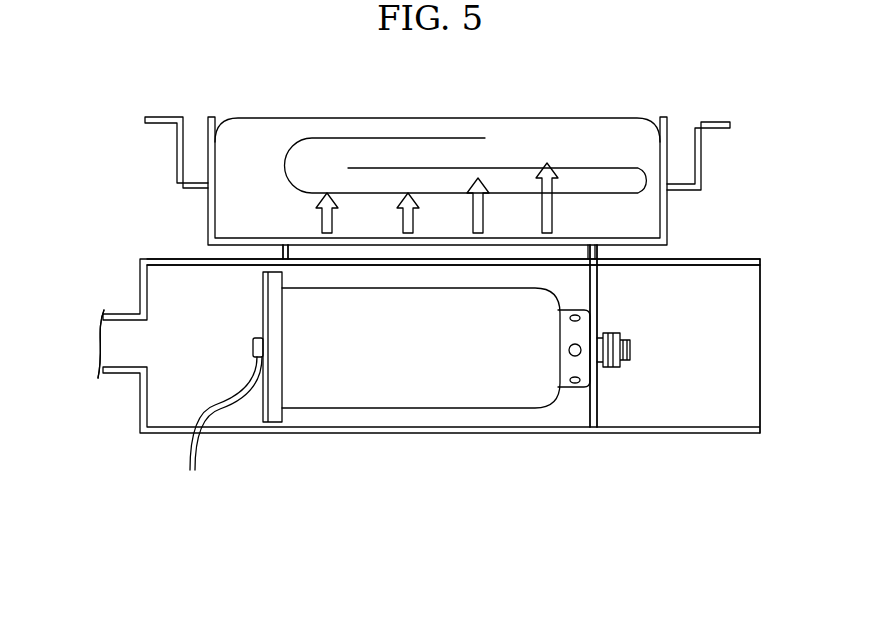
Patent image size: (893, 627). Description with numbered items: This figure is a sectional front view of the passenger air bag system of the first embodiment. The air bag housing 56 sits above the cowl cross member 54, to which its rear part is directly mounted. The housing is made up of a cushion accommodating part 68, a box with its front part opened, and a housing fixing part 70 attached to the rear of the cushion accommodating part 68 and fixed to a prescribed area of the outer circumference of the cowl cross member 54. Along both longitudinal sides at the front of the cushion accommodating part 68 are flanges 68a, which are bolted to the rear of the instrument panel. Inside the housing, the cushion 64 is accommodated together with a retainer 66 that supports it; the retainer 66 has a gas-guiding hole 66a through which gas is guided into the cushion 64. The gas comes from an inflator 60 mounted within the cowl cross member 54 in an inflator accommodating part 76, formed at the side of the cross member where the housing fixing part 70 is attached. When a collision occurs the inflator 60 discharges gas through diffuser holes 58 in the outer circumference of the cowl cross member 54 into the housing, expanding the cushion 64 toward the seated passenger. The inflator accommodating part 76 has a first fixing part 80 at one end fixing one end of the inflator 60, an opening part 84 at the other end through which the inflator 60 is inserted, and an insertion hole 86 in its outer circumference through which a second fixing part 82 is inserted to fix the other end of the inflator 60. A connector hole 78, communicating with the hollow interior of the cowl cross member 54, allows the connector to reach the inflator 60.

The cowl cross member 54 is at (105, 390).
The air bag housing 56 is at (128, 212).
The diffuser holes 58 is at (457, 262).
The inflator 60 is at (540, 400).
The cushion 64 is at (363, 123).
The retainer 66 is at (667, 243).
The gas-guiding hole 66a is at (530, 245).
The cushion accommodating part 68 is at (208, 215).
The flanges 68a is at (178, 150).
The housing fixing part 70 is at (290, 258).
The inflator accommodating part 76 is at (433, 433).
The connector hole 78 is at (192, 433).
The first fixing part 80 is at (288, 425).
The second fixing part 82 is at (612, 415).
The opening part 84 is at (748, 352).
The insertion hole 86 is at (598, 270).